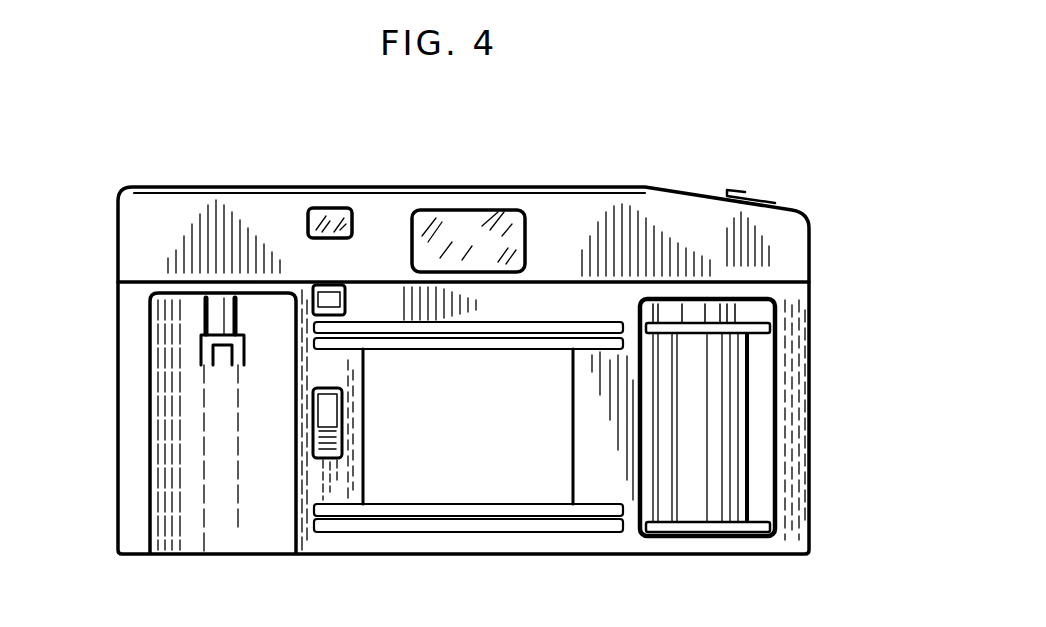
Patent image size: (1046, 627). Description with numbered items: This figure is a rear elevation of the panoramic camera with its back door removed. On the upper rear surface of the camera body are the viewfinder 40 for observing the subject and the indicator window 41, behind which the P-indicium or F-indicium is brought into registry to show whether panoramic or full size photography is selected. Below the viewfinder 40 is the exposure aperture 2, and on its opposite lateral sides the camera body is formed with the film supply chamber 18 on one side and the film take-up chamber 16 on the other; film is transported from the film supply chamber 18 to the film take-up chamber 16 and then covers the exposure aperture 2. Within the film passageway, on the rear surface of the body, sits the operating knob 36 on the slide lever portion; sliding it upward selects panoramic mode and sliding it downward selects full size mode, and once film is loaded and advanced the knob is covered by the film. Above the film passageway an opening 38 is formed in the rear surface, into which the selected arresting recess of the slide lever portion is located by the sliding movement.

The exposure aperture 2 is at (515, 367).
The film take-up chamber 16 is at (757, 467).
The film supply chamber 18 is at (183, 463).
The operating knob 36 is at (343, 452).
The opening 38 is at (313, 303).
The viewfinder 40 is at (468, 224).
The indicator window 41 is at (332, 216).